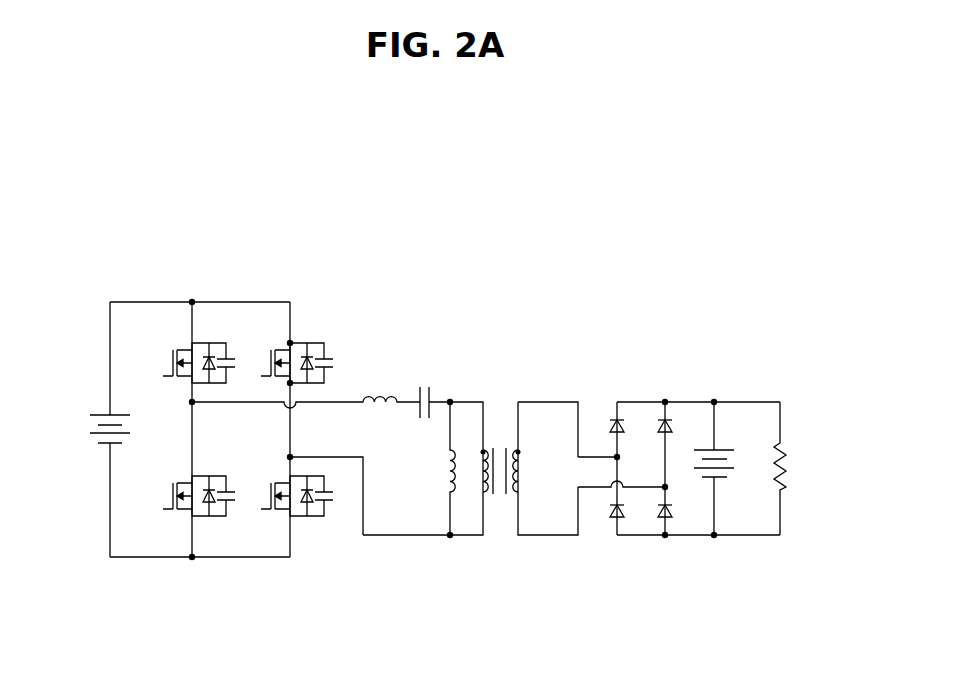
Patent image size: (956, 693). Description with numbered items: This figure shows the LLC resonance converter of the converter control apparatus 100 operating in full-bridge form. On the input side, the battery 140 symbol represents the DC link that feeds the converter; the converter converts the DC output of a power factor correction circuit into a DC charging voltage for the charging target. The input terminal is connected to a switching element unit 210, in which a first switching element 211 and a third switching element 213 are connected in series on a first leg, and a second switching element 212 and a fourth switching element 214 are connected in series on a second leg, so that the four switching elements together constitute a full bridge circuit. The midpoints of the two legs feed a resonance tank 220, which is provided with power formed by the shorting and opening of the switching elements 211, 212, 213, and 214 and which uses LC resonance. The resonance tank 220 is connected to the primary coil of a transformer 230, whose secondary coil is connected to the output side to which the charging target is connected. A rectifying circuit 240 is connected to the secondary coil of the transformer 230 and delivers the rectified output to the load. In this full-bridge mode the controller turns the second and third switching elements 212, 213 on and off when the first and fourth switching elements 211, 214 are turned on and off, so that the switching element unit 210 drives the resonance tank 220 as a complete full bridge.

The converter control apparatus 100 is at (504, 255).
The battery 140 is at (96, 408).
The switching element unit 210 is at (270, 295).
The first switching element 211 is at (218, 336).
The second switching element 212 is at (315, 336).
The third switching element 213 is at (218, 526).
The fourth switching element 214 is at (317, 526).
The resonance tank 220 is at (396, 390).
The transformer 230 is at (499, 435).
The rectifying circuit 240 is at (644, 395).